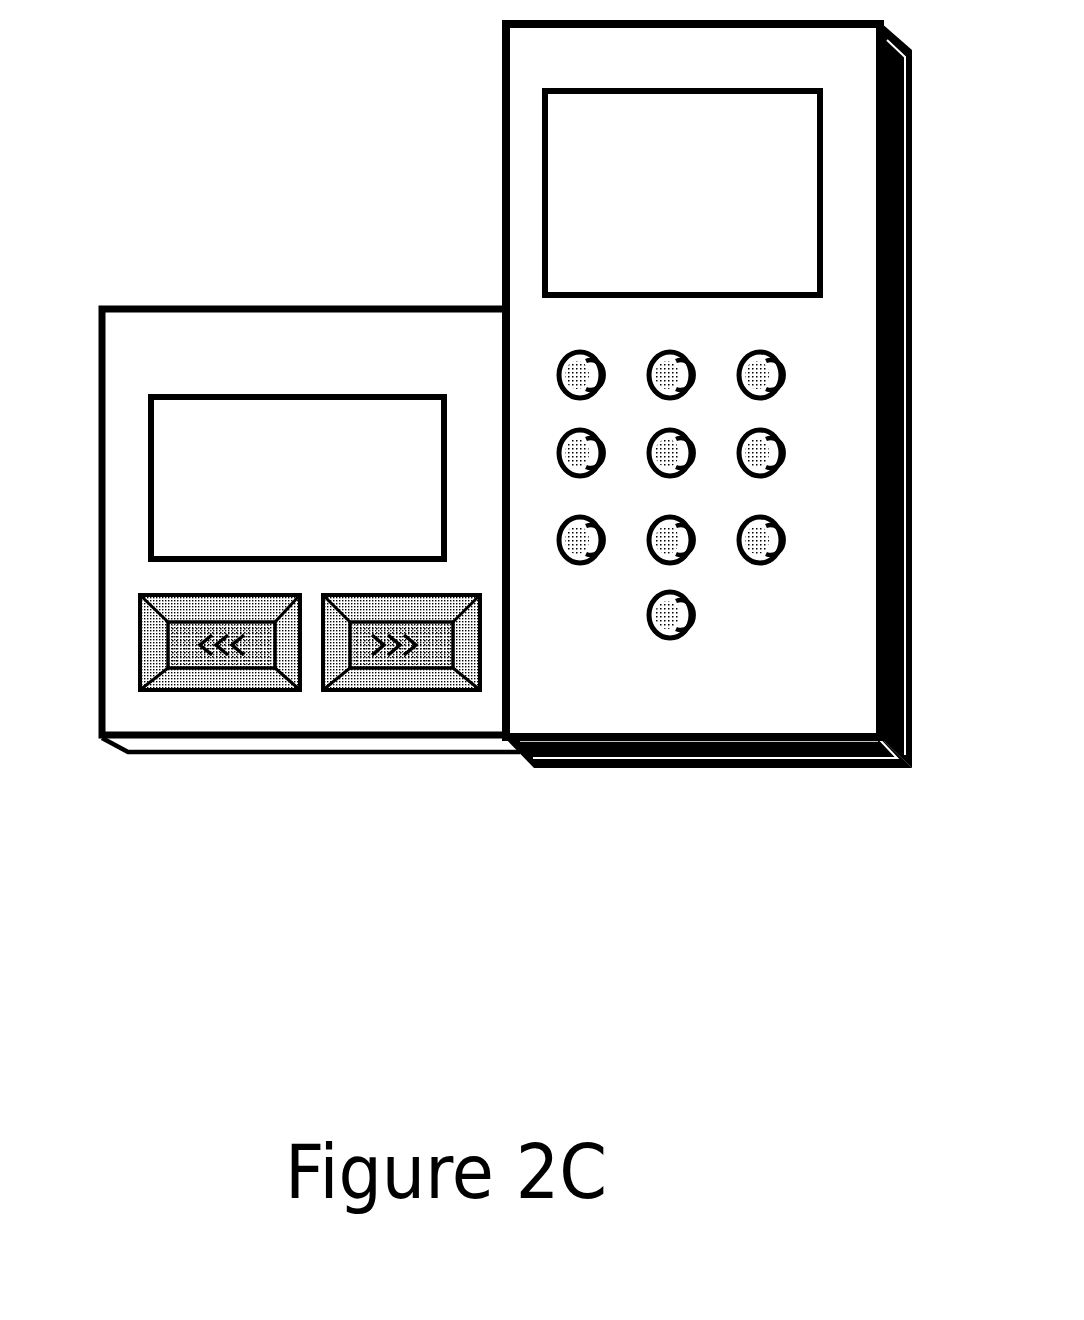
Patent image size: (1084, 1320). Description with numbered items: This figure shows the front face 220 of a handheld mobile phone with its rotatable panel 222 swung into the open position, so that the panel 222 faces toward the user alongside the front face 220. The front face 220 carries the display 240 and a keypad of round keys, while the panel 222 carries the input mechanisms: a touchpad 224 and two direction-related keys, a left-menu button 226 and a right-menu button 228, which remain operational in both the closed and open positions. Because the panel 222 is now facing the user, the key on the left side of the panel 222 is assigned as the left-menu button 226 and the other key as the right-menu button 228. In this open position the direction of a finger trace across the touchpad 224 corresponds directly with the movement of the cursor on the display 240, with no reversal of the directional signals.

The front face 220 is at (708, 395).
The panel 222 is at (311, 530).
The touchpad 224 is at (297, 478).
The left-menu button 226 is at (200, 707).
The right-menu button 228 is at (428, 714).
The display 240 is at (682, 193).